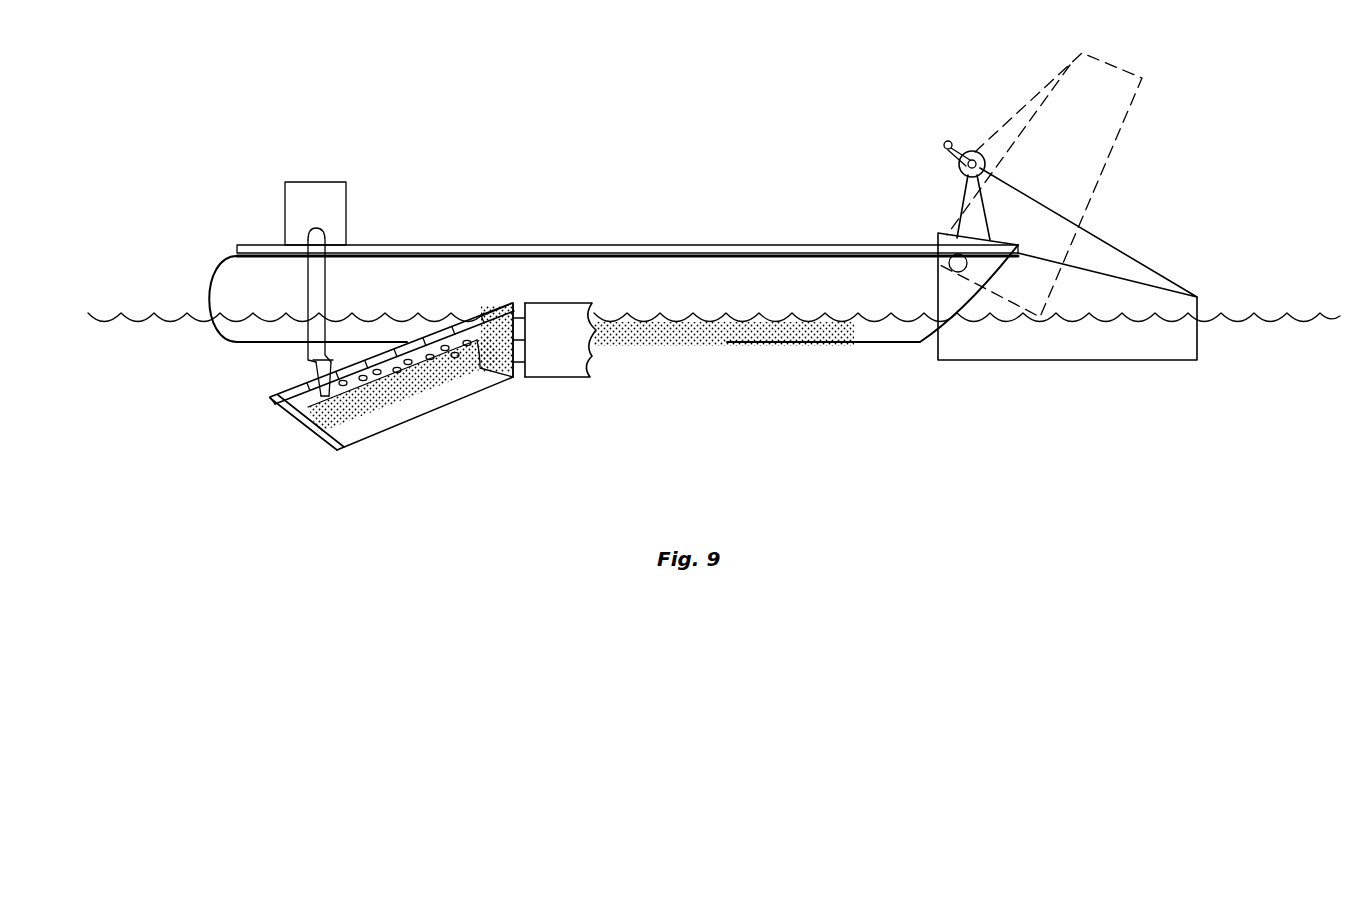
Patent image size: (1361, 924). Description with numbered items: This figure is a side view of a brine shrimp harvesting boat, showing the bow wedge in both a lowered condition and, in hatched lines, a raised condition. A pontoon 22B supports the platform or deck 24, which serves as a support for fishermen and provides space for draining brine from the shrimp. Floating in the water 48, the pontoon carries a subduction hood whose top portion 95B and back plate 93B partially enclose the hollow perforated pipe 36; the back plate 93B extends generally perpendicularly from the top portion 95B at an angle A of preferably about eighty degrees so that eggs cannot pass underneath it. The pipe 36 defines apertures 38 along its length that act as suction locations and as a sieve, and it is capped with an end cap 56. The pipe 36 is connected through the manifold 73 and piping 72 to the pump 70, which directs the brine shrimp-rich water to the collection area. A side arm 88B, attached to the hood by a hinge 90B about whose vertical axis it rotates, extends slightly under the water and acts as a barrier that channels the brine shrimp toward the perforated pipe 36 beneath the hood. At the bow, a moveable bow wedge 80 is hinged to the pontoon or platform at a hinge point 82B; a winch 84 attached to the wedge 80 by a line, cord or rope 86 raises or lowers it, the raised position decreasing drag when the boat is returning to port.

The pontoon 22B is at (742, 300).
The platform or deck 24 is at (647, 243).
The pipe 36 is at (417, 372).
The apertures 38 is at (476, 360).
The water 48 is at (1270, 320).
The end cap 56 is at (485, 323).
The pump 70 is at (297, 208).
The piping 72 is at (315, 296).
The manifold 73 is at (317, 373).
The bow wedge 80 is at (1105, 360).
The hinge point 82B is at (926, 273).
The winch 84 is at (960, 168).
The line, cord or rope 86 is at (1137, 253).
The side arm 88B is at (577, 347).
The hinge 90B is at (523, 303).
The back plate 93B is at (300, 418).
The top portion 95B is at (371, 362).
The angle A is at (283, 402).